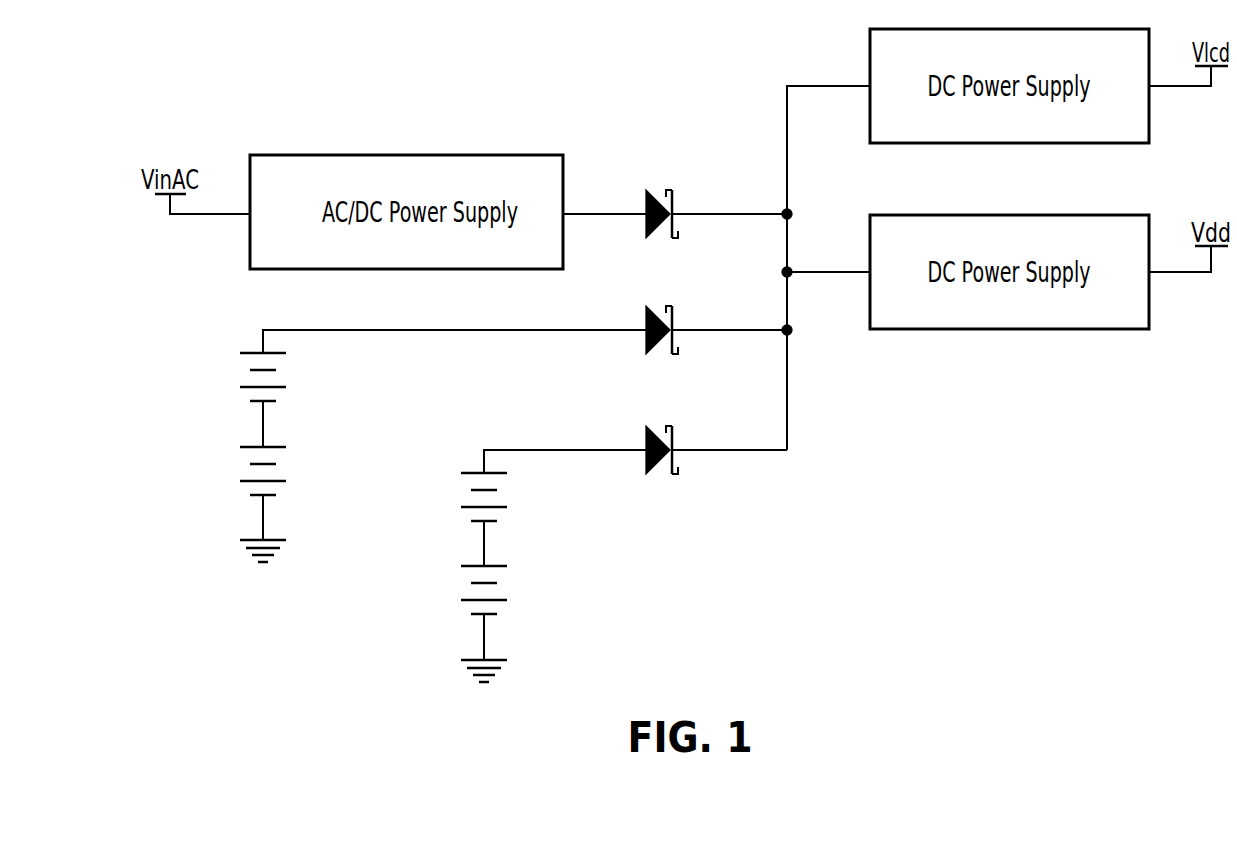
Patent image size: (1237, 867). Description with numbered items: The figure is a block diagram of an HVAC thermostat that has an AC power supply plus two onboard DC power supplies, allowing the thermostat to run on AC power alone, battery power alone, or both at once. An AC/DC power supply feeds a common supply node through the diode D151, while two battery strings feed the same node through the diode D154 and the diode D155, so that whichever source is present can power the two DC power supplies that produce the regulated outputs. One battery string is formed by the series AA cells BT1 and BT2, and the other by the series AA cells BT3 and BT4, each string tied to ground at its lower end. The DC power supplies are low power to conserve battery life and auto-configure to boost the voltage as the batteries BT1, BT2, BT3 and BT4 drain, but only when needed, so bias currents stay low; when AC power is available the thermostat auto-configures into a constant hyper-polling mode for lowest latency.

The Schottky diode BAT54 (AC/DC supply output) D151 is at (676, 215).
The Schottky diode BAT54 (battery BT1/BT2 output) D154 is at (676, 333).
The Schottky diode BAT54 (battery BT3/BT4 output) D155 is at (676, 450).
The AA battery cell BT1 is at (282, 400).
The AA battery cell BT2 is at (282, 493).
The AA battery cell BT3 is at (503, 519).
The AA battery cell BT4 is at (503, 613).